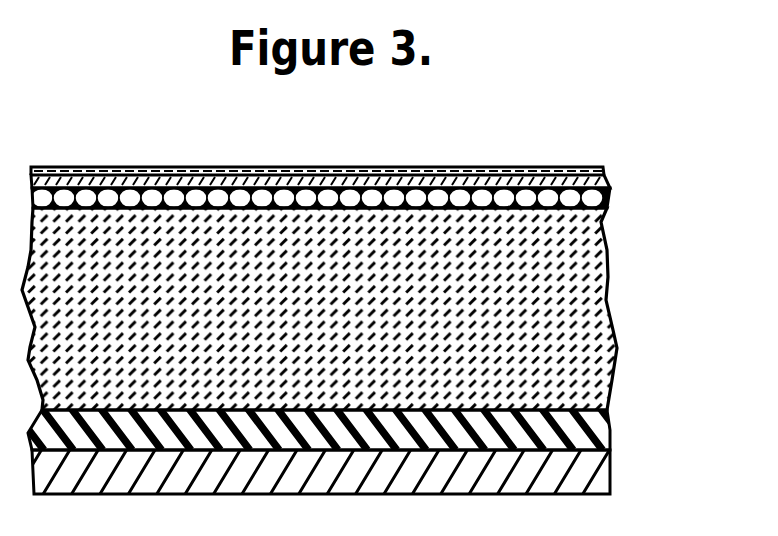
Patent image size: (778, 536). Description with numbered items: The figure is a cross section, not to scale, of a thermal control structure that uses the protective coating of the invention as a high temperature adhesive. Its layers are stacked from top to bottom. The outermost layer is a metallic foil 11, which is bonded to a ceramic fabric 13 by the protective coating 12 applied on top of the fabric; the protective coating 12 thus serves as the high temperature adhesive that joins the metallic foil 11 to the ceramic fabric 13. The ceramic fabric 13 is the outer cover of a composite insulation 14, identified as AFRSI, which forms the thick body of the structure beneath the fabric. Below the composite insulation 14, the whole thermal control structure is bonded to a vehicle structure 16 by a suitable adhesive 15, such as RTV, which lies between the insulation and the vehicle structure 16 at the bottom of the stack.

The metallic foil 11 is at (595, 170).
The protective coating 12 is at (598, 184).
The ceramic fabric 13 is at (595, 200).
The composite insulation 14 is at (587, 277).
The adhesive 15 is at (592, 429).
The vehicle structure 16 is at (592, 473).